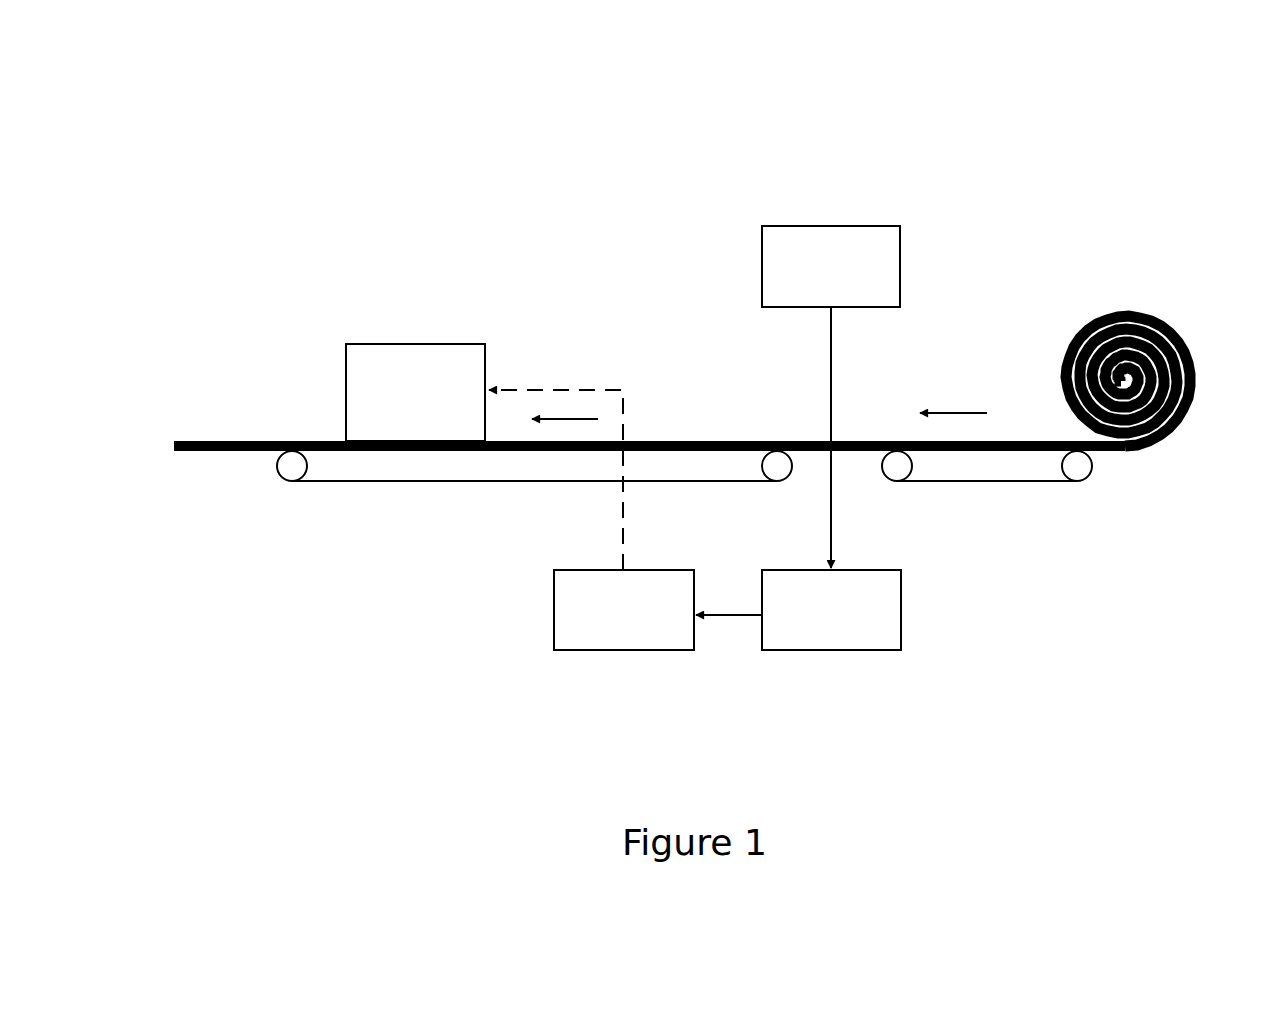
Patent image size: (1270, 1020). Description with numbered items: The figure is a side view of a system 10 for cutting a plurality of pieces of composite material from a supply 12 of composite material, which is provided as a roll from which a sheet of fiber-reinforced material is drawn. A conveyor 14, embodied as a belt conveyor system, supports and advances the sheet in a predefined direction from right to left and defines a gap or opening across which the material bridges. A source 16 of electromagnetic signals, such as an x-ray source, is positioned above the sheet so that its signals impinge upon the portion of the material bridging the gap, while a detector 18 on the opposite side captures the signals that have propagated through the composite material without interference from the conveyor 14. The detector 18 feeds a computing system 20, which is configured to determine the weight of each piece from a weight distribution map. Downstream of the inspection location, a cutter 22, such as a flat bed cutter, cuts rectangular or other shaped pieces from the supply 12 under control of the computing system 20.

The system 10 is at (776, 91).
The supply of composite material 12 is at (1148, 345).
The conveyor 14 is at (684, 497).
The source of electromagnetic signals 16 is at (856, 235).
The detector 18 is at (848, 643).
The computing system 20 is at (633, 643).
The cutter 22 is at (437, 361).